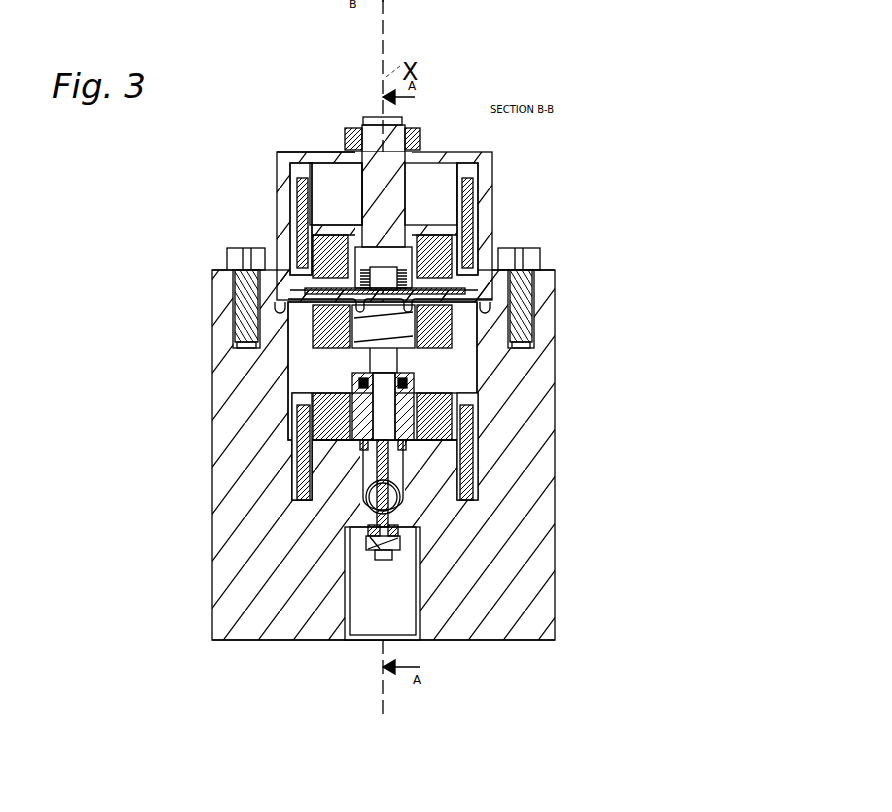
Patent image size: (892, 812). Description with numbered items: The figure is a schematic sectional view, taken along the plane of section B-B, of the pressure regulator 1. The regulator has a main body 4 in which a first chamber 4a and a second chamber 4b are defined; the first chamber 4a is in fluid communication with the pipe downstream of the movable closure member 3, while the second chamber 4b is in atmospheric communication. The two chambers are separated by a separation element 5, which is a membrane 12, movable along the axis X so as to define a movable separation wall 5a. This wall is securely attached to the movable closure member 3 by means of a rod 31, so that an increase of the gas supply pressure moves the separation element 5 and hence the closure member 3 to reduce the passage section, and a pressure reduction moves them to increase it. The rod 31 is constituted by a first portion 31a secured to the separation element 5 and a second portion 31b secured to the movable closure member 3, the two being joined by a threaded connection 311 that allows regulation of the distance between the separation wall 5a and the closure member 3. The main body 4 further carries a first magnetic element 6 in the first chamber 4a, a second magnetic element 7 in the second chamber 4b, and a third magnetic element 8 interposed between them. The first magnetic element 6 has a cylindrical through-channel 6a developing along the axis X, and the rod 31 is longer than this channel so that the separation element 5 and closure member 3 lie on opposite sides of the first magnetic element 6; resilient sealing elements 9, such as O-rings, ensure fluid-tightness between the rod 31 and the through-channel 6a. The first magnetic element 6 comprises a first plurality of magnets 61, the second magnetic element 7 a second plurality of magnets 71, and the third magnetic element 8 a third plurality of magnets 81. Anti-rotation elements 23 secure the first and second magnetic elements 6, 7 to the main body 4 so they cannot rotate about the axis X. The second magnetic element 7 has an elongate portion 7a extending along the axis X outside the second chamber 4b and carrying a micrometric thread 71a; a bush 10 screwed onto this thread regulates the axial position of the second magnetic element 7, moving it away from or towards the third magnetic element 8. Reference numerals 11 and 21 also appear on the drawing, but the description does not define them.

The pressure regulator 1 is at (688, 202).
The movable closure member 3 is at (402, 538).
The main body 4 is at (212, 298).
The first chamber 4a is at (315, 366).
The second chamber 4b is at (538, 290).
The separation element 5 is at (300, 298).
The movable separation wall 5a is at (300, 310).
The first magnetic element 6 is at (472, 412).
The through-channel 6a is at (472, 425).
The second magnetic element 7 is at (497, 250).
The elongate portion 7a is at (320, 175).
The third magnetic element 8 is at (455, 316).
The third plurality of magnets 81 is at (312, 332).
The resilient sealing elements 9 is at (310, 395).
The bush 10 is at (422, 137).
The recess 11 is at (342, 180).
The membrane 12 is at (468, 300).
The lead 21 is at (425, 0).
The anti-rotation elements 23 is at (302, 180).
The rod 31 is at (360, 402).
The first portion 31a is at (410, 372).
The second portion 31b is at (402, 480).
The threaded connection 311 is at (368, 512).
The first plurality of magnets 61 is at (300, 470).
The second plurality of magnets 71 is at (296, 205).
The micrometric thread 71a is at (345, 178).